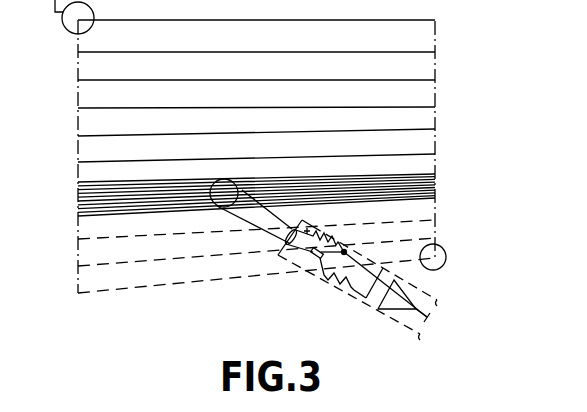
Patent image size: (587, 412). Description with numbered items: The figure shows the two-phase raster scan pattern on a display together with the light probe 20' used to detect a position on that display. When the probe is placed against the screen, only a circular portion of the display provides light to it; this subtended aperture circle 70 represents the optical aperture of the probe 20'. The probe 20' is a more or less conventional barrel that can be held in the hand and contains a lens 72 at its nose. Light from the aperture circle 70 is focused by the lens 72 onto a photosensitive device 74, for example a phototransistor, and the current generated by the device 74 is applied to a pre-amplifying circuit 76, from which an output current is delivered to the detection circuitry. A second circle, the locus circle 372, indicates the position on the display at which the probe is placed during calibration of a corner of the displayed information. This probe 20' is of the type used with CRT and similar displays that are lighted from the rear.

The aperture circle 70 is at (221, 180).
The locus circle 372 is at (446, 255).
The lens 72 is at (284, 250).
The photosensitive device 74 is at (312, 262).
The probe 20' is at (343, 284).
The pre-amplifying circuit 76 is at (384, 312).